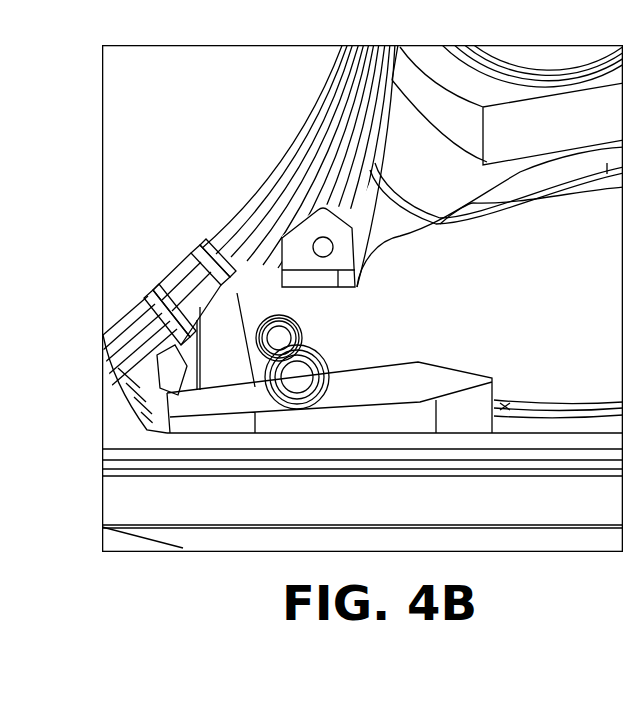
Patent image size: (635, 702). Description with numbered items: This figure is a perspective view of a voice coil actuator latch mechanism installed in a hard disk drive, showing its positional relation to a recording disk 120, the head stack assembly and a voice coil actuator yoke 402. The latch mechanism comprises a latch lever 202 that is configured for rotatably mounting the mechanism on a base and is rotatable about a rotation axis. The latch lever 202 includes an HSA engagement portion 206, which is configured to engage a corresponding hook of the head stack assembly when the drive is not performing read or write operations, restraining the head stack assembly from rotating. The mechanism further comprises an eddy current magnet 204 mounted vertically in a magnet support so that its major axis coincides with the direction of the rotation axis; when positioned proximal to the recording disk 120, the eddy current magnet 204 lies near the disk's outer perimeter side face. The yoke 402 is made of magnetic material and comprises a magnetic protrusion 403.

The recording disk 120 is at (158, 77).
The eddy current magnet 204 is at (195, 263).
The magnetic protrusion 403 is at (137, 313).
The latch lever 202 is at (258, 415).
The HSA engagement portion 206 is at (478, 422).
The voice coil actuator yoke 402 is at (606, 390).